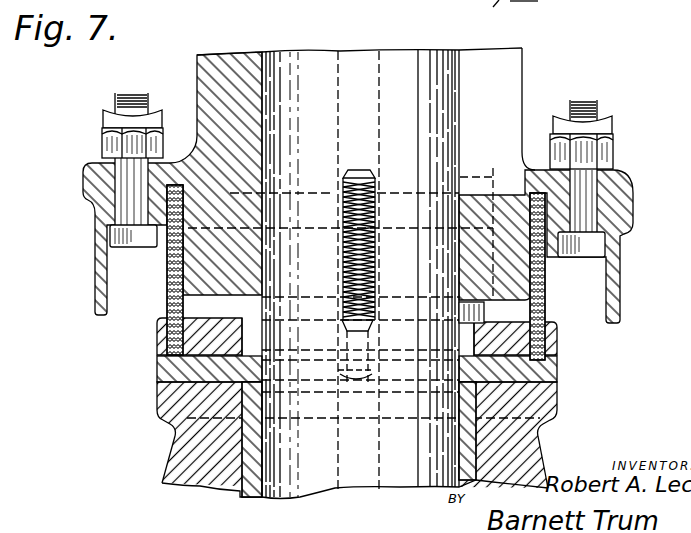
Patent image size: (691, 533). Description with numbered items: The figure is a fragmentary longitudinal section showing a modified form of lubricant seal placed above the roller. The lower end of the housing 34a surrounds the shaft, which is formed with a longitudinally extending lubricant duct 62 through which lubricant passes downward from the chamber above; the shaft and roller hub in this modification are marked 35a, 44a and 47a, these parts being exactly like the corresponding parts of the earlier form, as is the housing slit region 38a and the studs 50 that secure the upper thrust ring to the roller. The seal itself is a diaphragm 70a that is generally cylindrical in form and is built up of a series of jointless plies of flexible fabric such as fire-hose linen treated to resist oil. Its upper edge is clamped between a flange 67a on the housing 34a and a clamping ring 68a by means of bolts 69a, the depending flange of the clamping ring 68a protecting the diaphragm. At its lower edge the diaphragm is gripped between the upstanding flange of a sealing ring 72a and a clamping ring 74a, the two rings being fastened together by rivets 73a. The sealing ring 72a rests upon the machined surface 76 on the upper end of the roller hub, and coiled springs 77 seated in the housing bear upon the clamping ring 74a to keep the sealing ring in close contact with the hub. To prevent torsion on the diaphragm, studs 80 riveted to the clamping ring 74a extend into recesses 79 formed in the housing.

The housing 34a is at (212, 86).
The bore of body 35a is at (310, 73).
The studs 50 is at (509, 13).
The sleeve 38a is at (497, 77).
The coiled springs 77 is at (366, 172).
The recesses 79 is at (482, 175).
The bolts 69a is at (110, 152).
The flange 67a is at (105, 172).
The clamping ring 68a is at (108, 214).
The diaphragm 70a is at (167, 273).
The studs 80 is at (546, 262).
The clamping ring 74a is at (205, 330).
The sealing ring 72a is at (543, 368).
The machined surface 76 is at (182, 384).
The lower body 44a is at (187, 464).
The liner 47a is at (252, 460).
The rivets 73a is at (357, 373).
The lubricant duct 62 is at (362, 463).